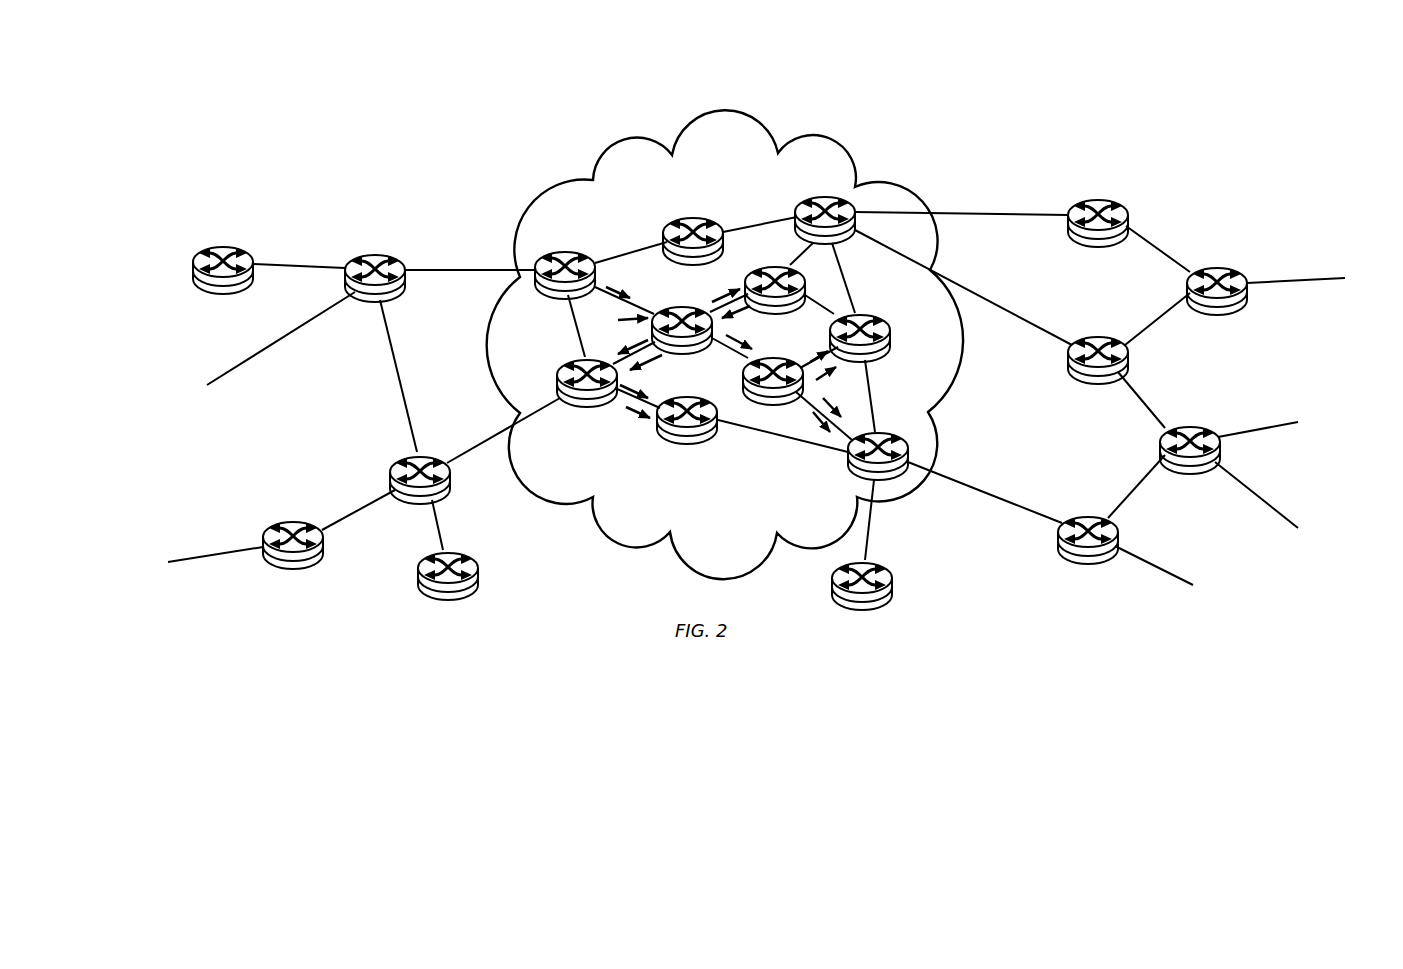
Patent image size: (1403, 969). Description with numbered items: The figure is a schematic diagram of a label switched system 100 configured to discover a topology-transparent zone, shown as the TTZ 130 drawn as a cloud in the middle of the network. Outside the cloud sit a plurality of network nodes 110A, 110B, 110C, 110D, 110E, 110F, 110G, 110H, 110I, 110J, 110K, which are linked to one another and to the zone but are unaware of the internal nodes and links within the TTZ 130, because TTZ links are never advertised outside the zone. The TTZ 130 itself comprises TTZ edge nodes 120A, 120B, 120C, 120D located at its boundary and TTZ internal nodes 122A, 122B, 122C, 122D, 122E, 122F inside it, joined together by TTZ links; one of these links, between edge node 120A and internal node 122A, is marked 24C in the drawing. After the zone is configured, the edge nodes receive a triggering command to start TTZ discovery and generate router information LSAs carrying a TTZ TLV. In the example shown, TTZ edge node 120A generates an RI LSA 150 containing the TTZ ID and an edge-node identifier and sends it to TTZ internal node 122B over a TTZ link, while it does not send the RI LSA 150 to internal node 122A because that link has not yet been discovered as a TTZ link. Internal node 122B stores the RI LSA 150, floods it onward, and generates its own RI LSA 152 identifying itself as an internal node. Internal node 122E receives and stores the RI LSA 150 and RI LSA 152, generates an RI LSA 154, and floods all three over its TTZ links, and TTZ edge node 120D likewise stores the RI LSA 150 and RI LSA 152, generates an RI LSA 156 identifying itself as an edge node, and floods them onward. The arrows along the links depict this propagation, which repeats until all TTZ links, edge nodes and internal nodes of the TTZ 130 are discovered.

The label switched system 100 is at (316, 93).
The network node 110A is at (195, 266).
The network node 110B is at (372, 248).
The network node 110C is at (290, 520).
The network node 110D is at (395, 460).
The network node 110E is at (478, 573).
The network node 110F is at (893, 583).
The network node 110G is at (1093, 198).
The network node 110H is at (1210, 265).
The network node 110I is at (1093, 335).
The network node 110J is at (1183, 425).
The network node 110K is at (1080, 513).
The TTZ edge node 120A is at (565, 252).
The TTZ edge node 120B is at (822, 196).
The TTZ edge node 120C is at (896, 496).
The TTZ edge node 120D is at (572, 358).
The TTZ internal node 122A is at (693, 216).
The TTZ internal node 122B is at (675, 306).
The TTZ internal node 122C is at (772, 267).
The TTZ internal node 122D is at (687, 440).
The TTZ internal node 122E is at (773, 400).
The TTZ internal node 122F is at (890, 336).
The TTZ 130 is at (913, 183).
The link 24C is at (565, 322).
The RI LSA 150 is at (606, 284).
The RI LSA 152 is at (618, 321).
The RI LSA 154 is at (818, 380).
The RI LSA 156 is at (626, 410).